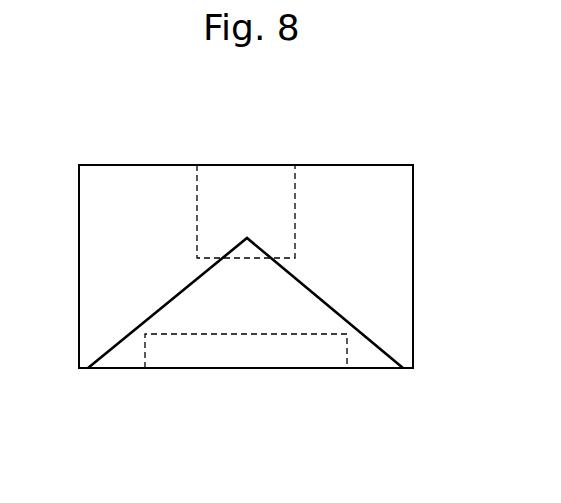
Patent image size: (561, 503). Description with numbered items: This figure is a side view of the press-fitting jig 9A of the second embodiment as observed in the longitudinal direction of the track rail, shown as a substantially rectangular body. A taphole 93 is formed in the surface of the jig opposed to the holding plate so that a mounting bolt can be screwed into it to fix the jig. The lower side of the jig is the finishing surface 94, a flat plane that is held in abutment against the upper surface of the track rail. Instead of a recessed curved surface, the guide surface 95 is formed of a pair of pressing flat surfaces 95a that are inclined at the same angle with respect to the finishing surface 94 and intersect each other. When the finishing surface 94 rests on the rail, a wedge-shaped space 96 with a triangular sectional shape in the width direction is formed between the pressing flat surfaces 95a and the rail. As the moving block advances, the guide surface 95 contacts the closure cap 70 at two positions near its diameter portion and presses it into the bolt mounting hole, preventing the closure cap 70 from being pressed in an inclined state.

The press-fitting jig 9A is at (439, 176).
The taphole 93 is at (294, 203).
The guide surface 95 is at (377, 420).
The pressing flat surface 95a is at (188, 290).
The closure cap 70 is at (160, 333).
The finishing surface 94 is at (120, 369).
The wedge-shaped space 96 is at (366, 354).